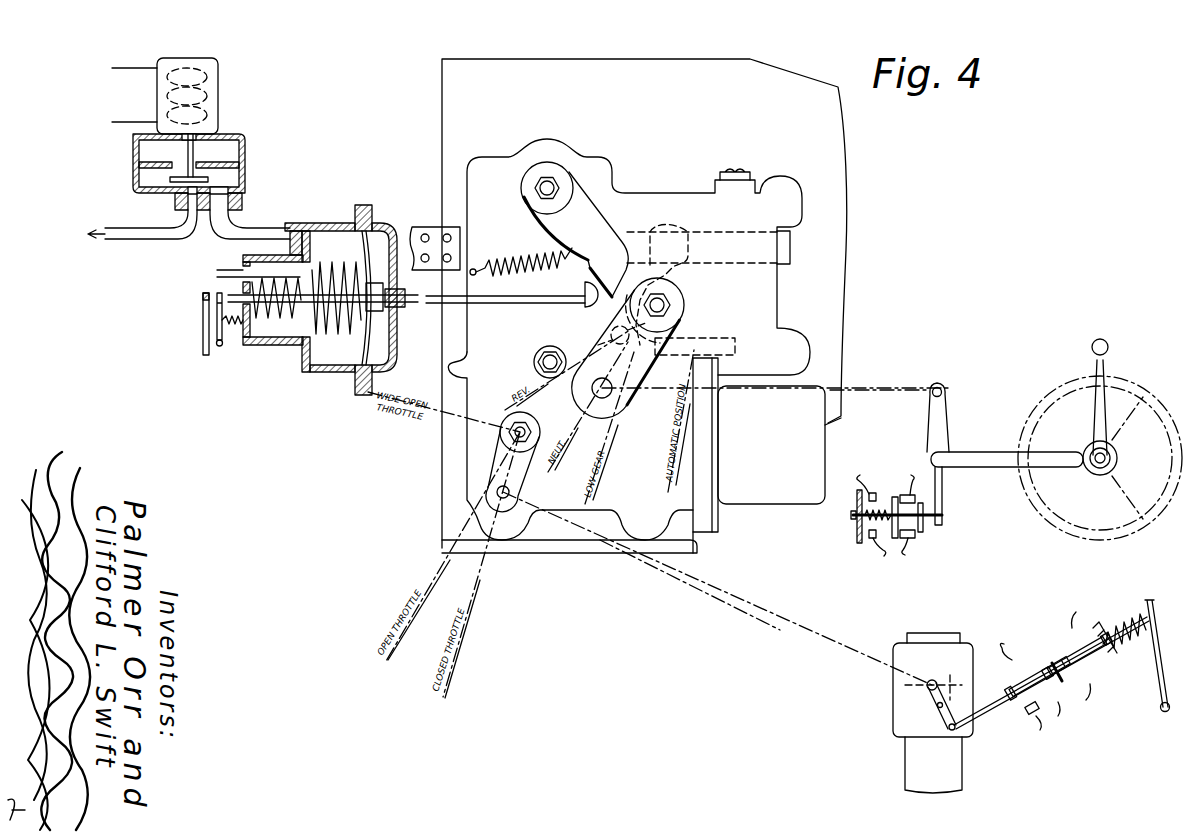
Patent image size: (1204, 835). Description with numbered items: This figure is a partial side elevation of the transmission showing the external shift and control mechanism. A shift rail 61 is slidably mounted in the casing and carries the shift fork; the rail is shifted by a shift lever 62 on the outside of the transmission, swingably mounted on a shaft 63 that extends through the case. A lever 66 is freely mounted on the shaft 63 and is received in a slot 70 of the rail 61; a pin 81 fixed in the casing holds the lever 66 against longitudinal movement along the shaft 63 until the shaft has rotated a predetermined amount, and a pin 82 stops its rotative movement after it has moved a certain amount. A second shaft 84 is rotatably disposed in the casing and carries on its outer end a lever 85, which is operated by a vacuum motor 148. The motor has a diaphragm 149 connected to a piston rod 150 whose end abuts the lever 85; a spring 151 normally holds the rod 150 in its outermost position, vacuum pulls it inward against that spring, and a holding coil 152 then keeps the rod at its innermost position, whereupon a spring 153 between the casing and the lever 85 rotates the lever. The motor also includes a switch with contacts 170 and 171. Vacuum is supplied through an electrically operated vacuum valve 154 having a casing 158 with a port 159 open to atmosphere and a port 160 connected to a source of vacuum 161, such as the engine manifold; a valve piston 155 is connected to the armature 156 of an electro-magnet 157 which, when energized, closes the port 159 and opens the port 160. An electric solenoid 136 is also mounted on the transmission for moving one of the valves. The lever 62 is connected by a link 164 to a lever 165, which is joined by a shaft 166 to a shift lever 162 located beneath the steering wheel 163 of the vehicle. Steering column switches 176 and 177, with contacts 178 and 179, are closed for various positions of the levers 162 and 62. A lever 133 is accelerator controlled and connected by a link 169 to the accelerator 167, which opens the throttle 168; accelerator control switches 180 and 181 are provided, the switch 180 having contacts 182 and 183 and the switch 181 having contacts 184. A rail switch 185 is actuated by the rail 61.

The electro-magnet 157 is at (218, 66).
The electrically operated vacuum valve 154 is at (248, 130).
The port 159 is at (245, 150).
The casing 158 is at (245, 172).
The armature 156 is at (188, 151).
The valve piston 155 is at (170, 179).
The source of vacuum 161 is at (112, 233).
The port 160 is at (205, 212).
The vacuum motor 148 is at (332, 223).
The diaphragm 149 is at (362, 248).
The rail switch 185 is at (422, 227).
The spring 153 is at (504, 256).
The piston rod 150 is at (420, 308).
The contact 170 is at (212, 290).
The contact 171 is at (203, 300).
The holding coil 152 is at (270, 330).
The spring 151 is at (333, 322).
The shaft 84 is at (560, 184).
The lever 85 is at (590, 213).
The slot 70 is at (690, 262).
The lever 66 is at (690, 274).
The shaft 63 is at (670, 303).
The shift rail 61 is at (790, 245).
The shift lever 62 is at (680, 327).
The pin 82 is at (730, 338).
The pin 81 is at (608, 333).
The lever 133 is at (500, 460).
The electric solenoid 136 is at (782, 496).
The link 164 is at (888, 390).
The lever 165 is at (942, 404).
The shaft 166 is at (981, 453).
The shift lever 162 is at (1097, 362).
The steering wheel 163 is at (1128, 388).
The contacts 179 is at (876, 490).
The steering column switch 176 is at (925, 534).
The contacts 178 is at (912, 540).
The steering column switch 177 is at (861, 557).
The link 169 is at (748, 622).
The throttle 168 is at (933, 713).
The accelerator control switch 180 is at (1012, 642).
The accelerator control switch 181 is at (1061, 616).
The contacts 184 is at (1070, 630).
The contacts 182 is at (1058, 700).
The contacts 183 is at (1034, 716).
The accelerator 167 is at (1158, 697).